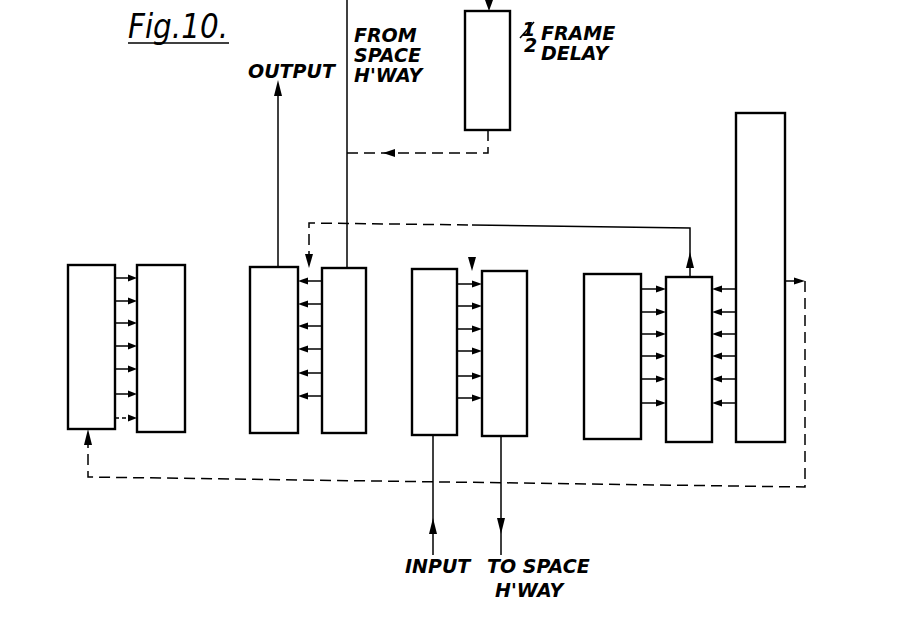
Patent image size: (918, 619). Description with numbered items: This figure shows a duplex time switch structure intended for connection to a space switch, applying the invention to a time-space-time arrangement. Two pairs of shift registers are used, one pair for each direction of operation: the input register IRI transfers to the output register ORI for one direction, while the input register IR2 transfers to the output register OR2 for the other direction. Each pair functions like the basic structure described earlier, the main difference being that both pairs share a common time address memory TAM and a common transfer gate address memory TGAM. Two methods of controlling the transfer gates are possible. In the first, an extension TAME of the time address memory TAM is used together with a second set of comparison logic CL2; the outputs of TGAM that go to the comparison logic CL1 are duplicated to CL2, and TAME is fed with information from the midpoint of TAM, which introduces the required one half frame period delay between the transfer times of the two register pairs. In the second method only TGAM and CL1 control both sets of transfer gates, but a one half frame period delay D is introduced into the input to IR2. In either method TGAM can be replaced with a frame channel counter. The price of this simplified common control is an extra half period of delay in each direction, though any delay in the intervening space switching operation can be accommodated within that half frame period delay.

The time address memory extension TAME is at (99, 333).
The second set of comparison logic CL2 is at (161, 362).
The output shift register OR2 is at (260, 337).
The input shift register IR2 is at (354, 340).
The input shift register IRI is at (434, 341).
The output shift register ORI is at (504, 343).
The transfer gate address memory TGAM is at (617, 345).
The comparison logic CL1 is at (651, 371).
The time address memory TAM is at (760, 264).
The one half frame period delay D is at (487, 70).